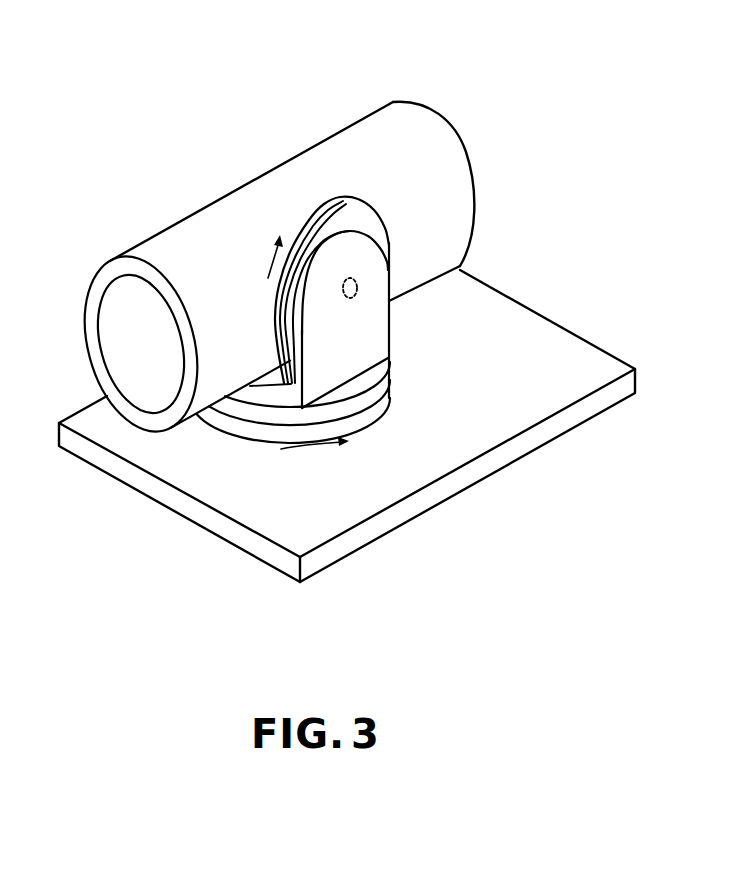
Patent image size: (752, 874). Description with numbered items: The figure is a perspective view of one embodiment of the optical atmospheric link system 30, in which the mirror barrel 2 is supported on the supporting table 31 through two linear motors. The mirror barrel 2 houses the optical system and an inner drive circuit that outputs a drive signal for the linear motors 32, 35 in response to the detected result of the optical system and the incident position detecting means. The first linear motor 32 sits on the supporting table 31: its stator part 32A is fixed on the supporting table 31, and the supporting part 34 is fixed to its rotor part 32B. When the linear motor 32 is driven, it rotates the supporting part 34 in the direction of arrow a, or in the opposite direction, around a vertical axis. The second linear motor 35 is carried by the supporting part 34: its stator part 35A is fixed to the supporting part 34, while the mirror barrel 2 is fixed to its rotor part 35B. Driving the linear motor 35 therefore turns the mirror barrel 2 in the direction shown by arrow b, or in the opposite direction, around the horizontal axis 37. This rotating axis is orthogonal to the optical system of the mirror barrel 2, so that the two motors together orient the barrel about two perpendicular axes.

The optical atmospheric link system 30 is at (99, 92).
The mirror barrel 2 is at (348, 138).
The supporting table 31 is at (582, 357).
The linear motor 32 is at (351, 425).
The stator part 32A is at (256, 425).
The rotor part 32B is at (365, 402).
The supporting part 34 is at (360, 319).
The linear motor 35 is at (363, 223).
The stator part 35A is at (350, 210).
The rotor part 35B is at (304, 217).
The horizontal axis 37 is at (357, 281).
The arrow a is at (307, 452).
The arrow b is at (267, 263).